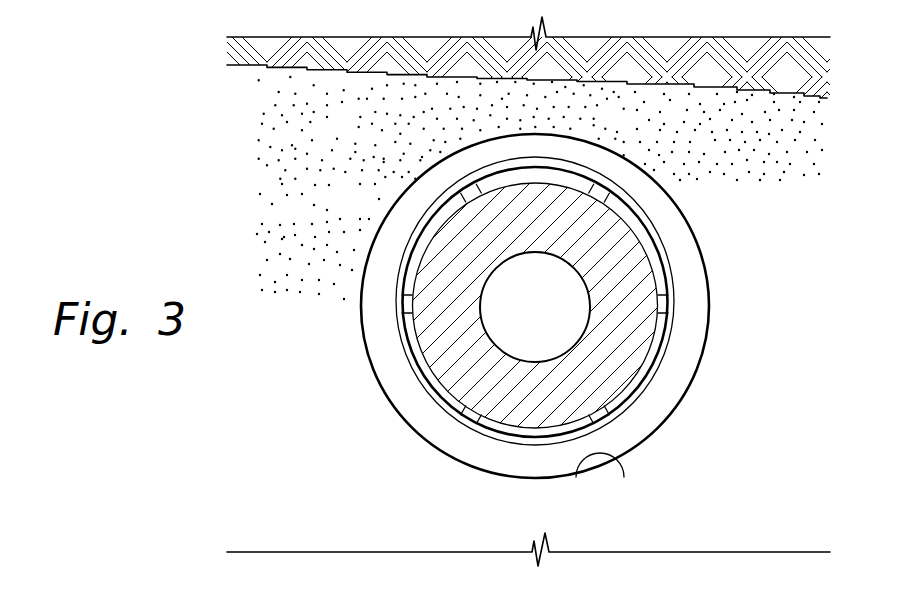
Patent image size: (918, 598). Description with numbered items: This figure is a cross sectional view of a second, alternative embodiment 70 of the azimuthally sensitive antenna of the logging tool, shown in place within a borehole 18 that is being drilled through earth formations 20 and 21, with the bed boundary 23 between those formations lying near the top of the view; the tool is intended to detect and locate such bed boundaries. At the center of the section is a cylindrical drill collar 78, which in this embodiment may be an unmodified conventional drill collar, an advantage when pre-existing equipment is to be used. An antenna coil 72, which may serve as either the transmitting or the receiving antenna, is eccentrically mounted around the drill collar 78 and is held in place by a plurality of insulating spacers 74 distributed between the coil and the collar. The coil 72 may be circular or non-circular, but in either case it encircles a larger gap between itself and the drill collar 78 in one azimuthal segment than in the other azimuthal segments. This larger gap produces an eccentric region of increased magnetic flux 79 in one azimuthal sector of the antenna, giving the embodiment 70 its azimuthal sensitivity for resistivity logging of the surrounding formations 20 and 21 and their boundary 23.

The borehole 18 is at (624, 477).
The earth formation 20 is at (686, 50).
The earth formation 21 is at (340, 510).
The bed boundary 23 is at (358, 75).
The alternative embodiment of the logging tool 70 is at (658, 211).
The antenna coil 72 is at (420, 231).
The insulating spacers 74 is at (664, 307).
The cylindrical drill collar 78 is at (440, 354).
The region of increased magnetic flux 79 is at (561, 175).